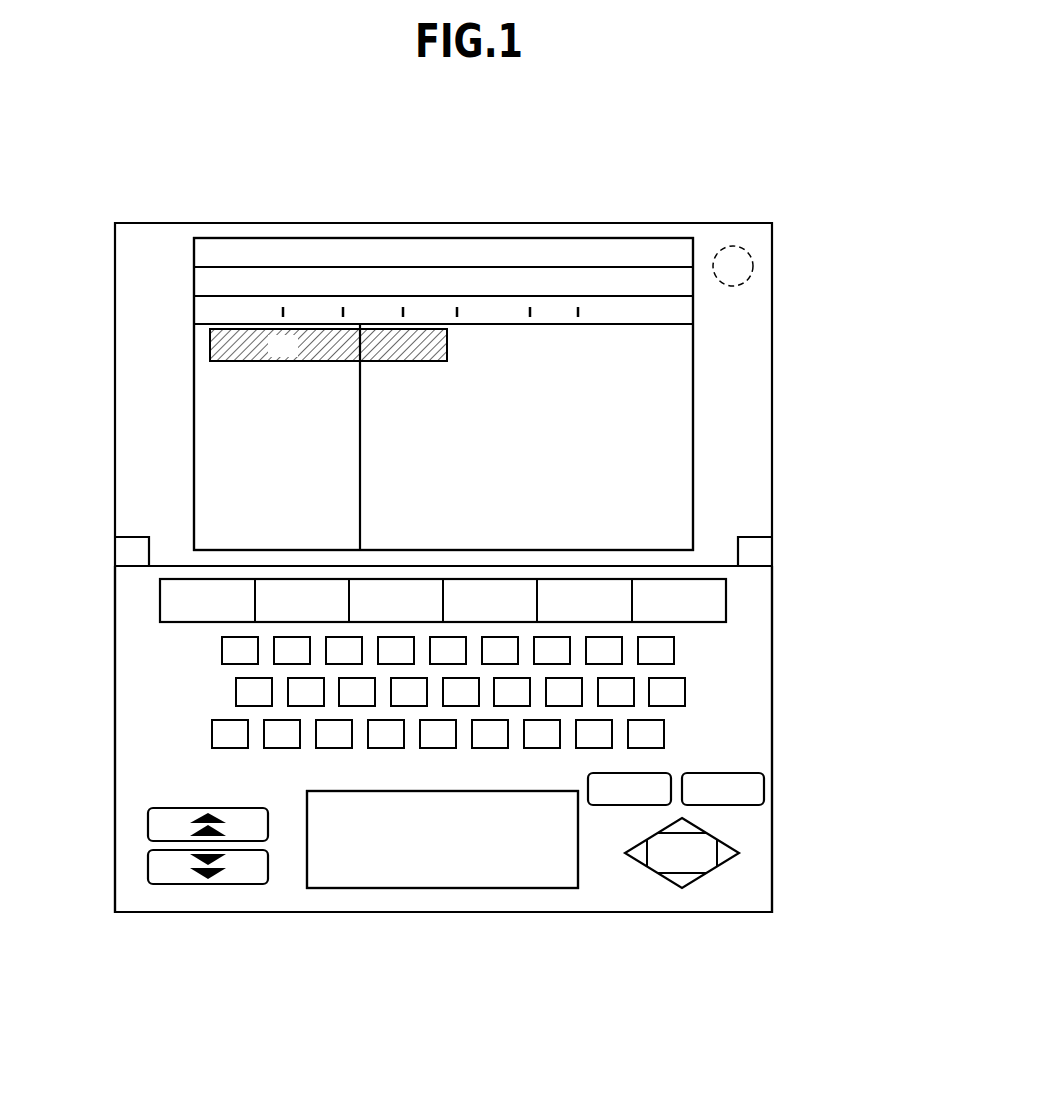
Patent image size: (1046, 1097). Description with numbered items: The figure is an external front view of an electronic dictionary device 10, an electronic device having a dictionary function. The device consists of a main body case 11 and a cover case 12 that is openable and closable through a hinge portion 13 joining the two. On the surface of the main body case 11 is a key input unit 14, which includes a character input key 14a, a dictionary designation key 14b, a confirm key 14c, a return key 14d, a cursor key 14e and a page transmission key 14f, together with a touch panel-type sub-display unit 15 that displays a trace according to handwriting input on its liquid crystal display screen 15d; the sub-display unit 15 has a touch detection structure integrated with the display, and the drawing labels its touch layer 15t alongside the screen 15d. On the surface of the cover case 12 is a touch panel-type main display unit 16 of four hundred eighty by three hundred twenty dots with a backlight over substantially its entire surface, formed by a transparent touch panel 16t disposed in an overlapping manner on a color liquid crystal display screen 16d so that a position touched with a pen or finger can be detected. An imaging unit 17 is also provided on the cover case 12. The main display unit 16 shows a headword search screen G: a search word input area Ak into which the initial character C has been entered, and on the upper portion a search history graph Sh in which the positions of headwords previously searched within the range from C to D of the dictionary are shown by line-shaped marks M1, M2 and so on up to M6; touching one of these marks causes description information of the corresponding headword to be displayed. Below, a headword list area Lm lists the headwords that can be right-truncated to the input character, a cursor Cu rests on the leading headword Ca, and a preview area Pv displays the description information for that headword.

The electronic dictionary device 10 is at (724, 190).
The main body case 11 is at (130, 723).
The cover case 12 is at (130, 461).
The hinge portion 13 is at (130, 550).
The key input unit 14 is at (838, 900).
The character input key 14a is at (776, 626).
The dictionary designation key 14b is at (776, 579).
The confirm key 14c is at (764, 789).
The return key 14d is at (665, 805).
The cursor key 14e is at (700, 862).
The page transmission key 14f is at (148, 868).
The sub-display unit 15 is at (498, 950).
The liquid crystal display screen 15d is at (401, 880).
The sub touch panel 15t is at (480, 880).
The main display unit 16 is at (574, 174).
The color liquid crystal display screen 16d is at (498, 245).
The transparent touch panel 16t is at (549, 243).
The imaging unit 17 is at (753, 258).
The cursor Cu is at (211, 340).
The headword list area Lm is at (210, 416).
The preview area Pv is at (672, 430).
The search history graph Sh is at (682, 308).
The headword search screen G is at (583, 252).
The search word input area Ak is at (435, 275).
The line-shaped mark M1 is at (285, 313).
The line-shaped mark M2 is at (348, 312).
The line-shaped mark M6 is at (582, 312).